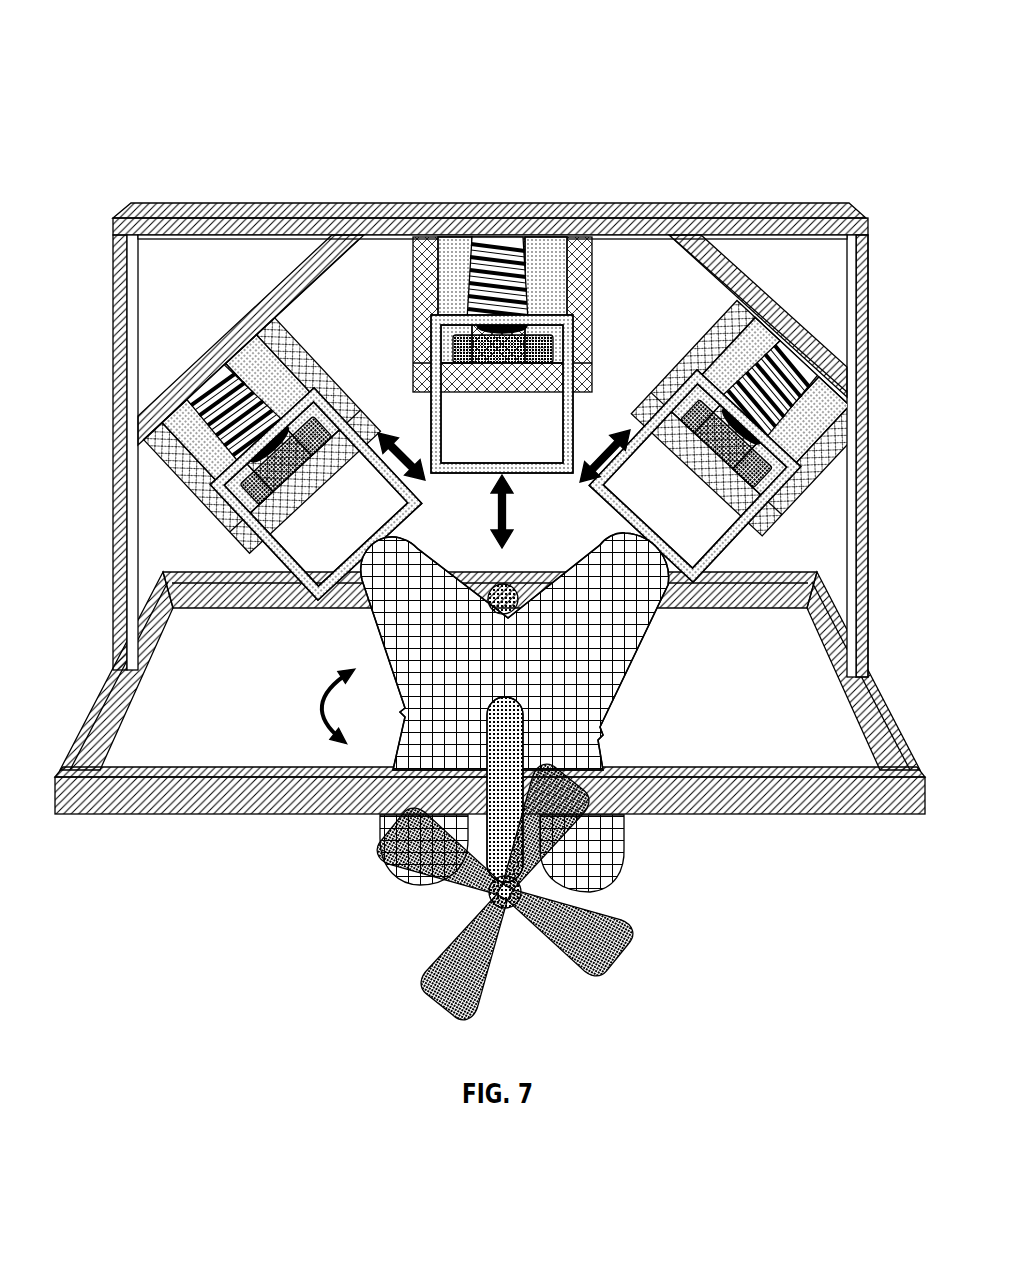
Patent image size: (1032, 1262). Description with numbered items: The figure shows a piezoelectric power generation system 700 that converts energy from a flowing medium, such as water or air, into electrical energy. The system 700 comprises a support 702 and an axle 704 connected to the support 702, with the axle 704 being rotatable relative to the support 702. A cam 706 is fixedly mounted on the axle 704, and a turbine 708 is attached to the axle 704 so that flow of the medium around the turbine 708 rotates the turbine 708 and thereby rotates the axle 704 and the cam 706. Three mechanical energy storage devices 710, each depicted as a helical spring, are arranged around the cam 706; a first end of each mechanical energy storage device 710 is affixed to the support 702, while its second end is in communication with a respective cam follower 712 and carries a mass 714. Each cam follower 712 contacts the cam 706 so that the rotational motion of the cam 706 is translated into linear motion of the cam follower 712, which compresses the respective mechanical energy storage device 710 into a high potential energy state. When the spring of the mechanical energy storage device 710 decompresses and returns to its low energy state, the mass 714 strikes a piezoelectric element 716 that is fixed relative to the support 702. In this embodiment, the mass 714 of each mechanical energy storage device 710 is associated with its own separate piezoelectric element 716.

The piezoelectric power generation system 700 is at (262, 52).
The support 702 is at (103, 707).
The axle 704 is at (497, 848).
The cam 706 is at (623, 663).
The turbine 708 is at (418, 968).
The mechanical energy storage device 710 is at (500, 300).
The cam follower 712 is at (517, 477).
The mass 714 is at (467, 307).
The piezoelectric element 716 is at (537, 363).